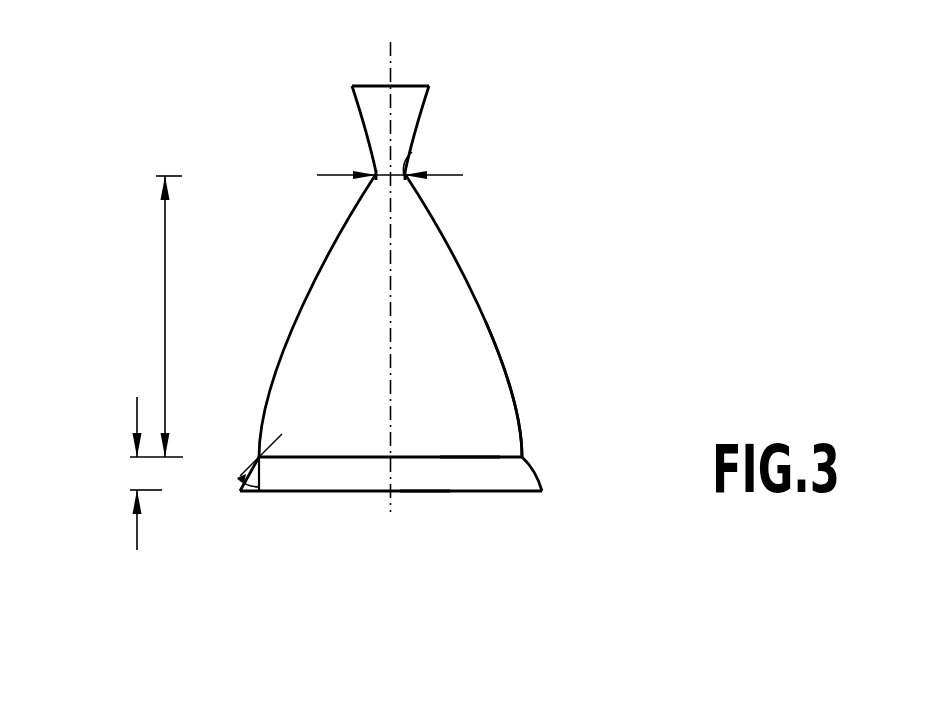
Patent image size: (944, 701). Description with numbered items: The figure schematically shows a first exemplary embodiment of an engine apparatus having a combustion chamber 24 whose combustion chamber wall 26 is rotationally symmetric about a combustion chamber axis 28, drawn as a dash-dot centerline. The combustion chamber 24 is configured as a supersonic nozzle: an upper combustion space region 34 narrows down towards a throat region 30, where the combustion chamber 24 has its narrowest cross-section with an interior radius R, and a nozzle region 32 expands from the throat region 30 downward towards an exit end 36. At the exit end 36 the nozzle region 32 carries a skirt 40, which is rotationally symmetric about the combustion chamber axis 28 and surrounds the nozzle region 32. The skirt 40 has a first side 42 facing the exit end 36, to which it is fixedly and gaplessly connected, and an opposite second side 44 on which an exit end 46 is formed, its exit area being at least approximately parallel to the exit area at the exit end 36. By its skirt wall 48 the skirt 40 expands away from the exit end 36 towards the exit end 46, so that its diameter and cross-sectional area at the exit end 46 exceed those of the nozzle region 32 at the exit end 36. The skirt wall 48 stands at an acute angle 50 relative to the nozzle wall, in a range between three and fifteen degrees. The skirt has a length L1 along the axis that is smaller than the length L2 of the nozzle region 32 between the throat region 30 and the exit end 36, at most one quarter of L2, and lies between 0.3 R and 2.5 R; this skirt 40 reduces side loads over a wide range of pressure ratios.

The combustion chamber 24 is at (460, 275).
The combustion chamber wall 26 is at (315, 277).
The combustion chamber axis 28 is at (392, 53).
The throat region 30 is at (406, 180).
The nozzle region 32 is at (480, 357).
The combustion space region 34 is at (412, 123).
The exit end of the nozzle region 36 is at (505, 462).
The skirt 40 is at (328, 491).
The first side of the skirt 42 is at (452, 457).
The second side of the skirt 44 is at (423, 491).
The exit end of the skirt 46 is at (530, 491).
The skirt wall 48 is at (238, 480).
The acute angle 50 is at (256, 492).
The radius R is at (412, 152).
The length of the skirt L1 is at (137, 475).
The length of the nozzle region L2 is at (165, 317).